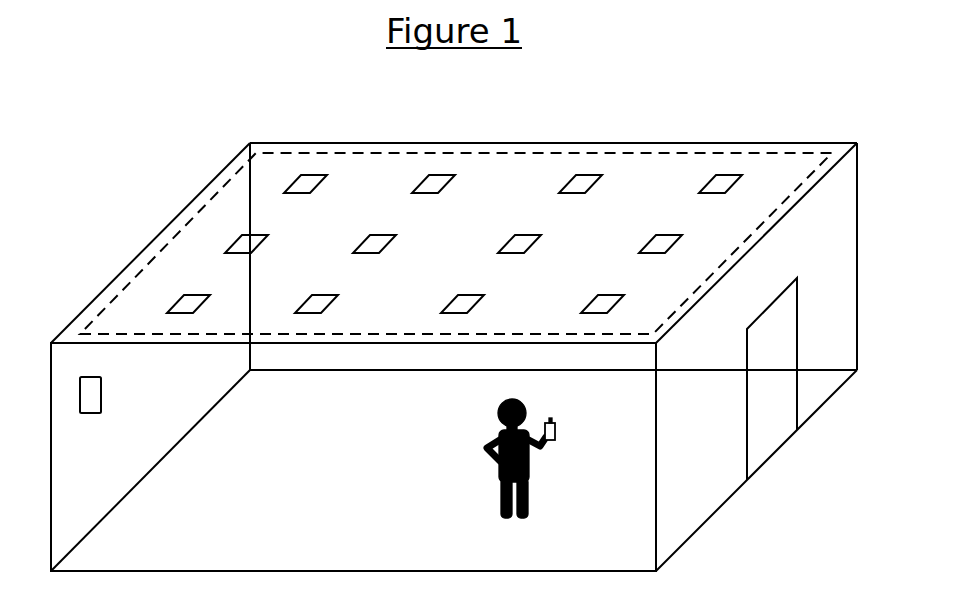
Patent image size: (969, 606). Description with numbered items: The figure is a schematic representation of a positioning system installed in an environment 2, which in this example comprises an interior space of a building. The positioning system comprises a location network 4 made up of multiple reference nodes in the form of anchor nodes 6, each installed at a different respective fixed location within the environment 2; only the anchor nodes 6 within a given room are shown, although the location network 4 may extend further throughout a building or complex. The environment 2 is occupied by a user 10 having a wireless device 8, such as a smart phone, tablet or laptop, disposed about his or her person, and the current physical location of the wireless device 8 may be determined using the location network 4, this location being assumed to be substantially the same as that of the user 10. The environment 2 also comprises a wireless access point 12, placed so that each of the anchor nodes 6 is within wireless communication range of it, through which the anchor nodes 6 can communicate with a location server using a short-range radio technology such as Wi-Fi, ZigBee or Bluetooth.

The environment 2 is at (699, 143).
The location network 4 is at (548, 153).
The anchor nodes 6 is at (597, 181).
The wireless device 8 is at (557, 424).
The user 10 is at (503, 475).
The wireless access point 12 is at (102, 395).